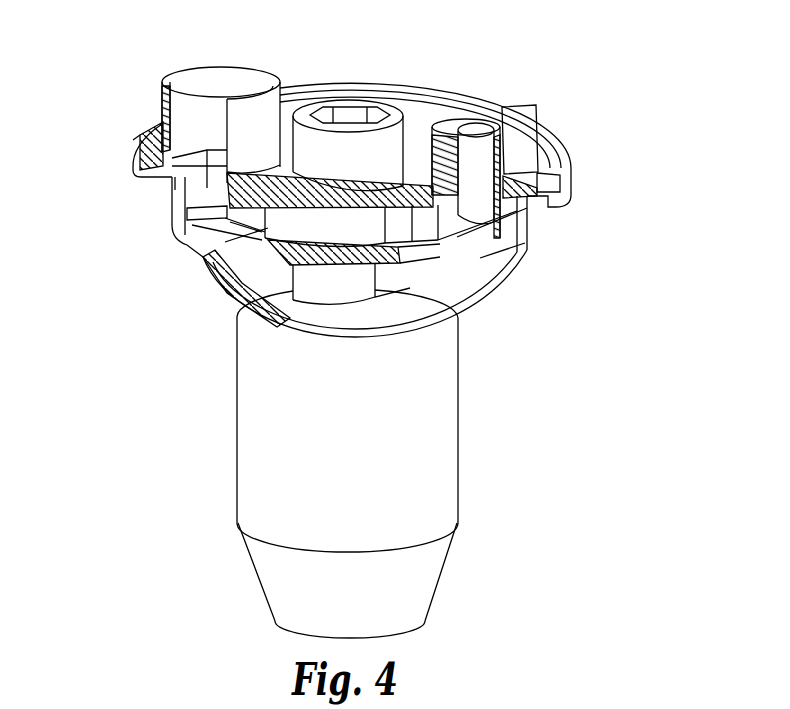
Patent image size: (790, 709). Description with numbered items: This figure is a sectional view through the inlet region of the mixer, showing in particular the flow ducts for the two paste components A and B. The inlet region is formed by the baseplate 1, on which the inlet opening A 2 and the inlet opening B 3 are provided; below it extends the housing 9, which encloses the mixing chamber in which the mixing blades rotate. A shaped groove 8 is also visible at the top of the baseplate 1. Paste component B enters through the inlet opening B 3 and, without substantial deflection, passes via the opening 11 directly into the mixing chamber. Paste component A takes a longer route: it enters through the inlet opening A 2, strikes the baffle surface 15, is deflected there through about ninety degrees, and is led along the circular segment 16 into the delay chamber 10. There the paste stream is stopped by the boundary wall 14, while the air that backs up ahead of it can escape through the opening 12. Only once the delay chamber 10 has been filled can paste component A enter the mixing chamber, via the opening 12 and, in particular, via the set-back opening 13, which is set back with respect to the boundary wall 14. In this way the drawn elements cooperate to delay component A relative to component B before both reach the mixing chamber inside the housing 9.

The baseplate 1 is at (563, 185).
The inlet opening A 2 is at (228, 78).
The inlet opening B 3 is at (468, 130).
The shaped groove 8 is at (352, 118).
The housing 9 is at (436, 462).
The delay chamber 10 is at (216, 273).
The opening for the paste B into the mixing chamber 11 is at (497, 223).
The opening for the paste A into the mixing chamber 12 is at (423, 252).
The set-back opening for the paste A into the mixing chamber 13 is at (266, 231).
The boundary wall 14 is at (473, 238).
The baffle surface 15 is at (196, 212).
The circular segment 16 is at (330, 258).